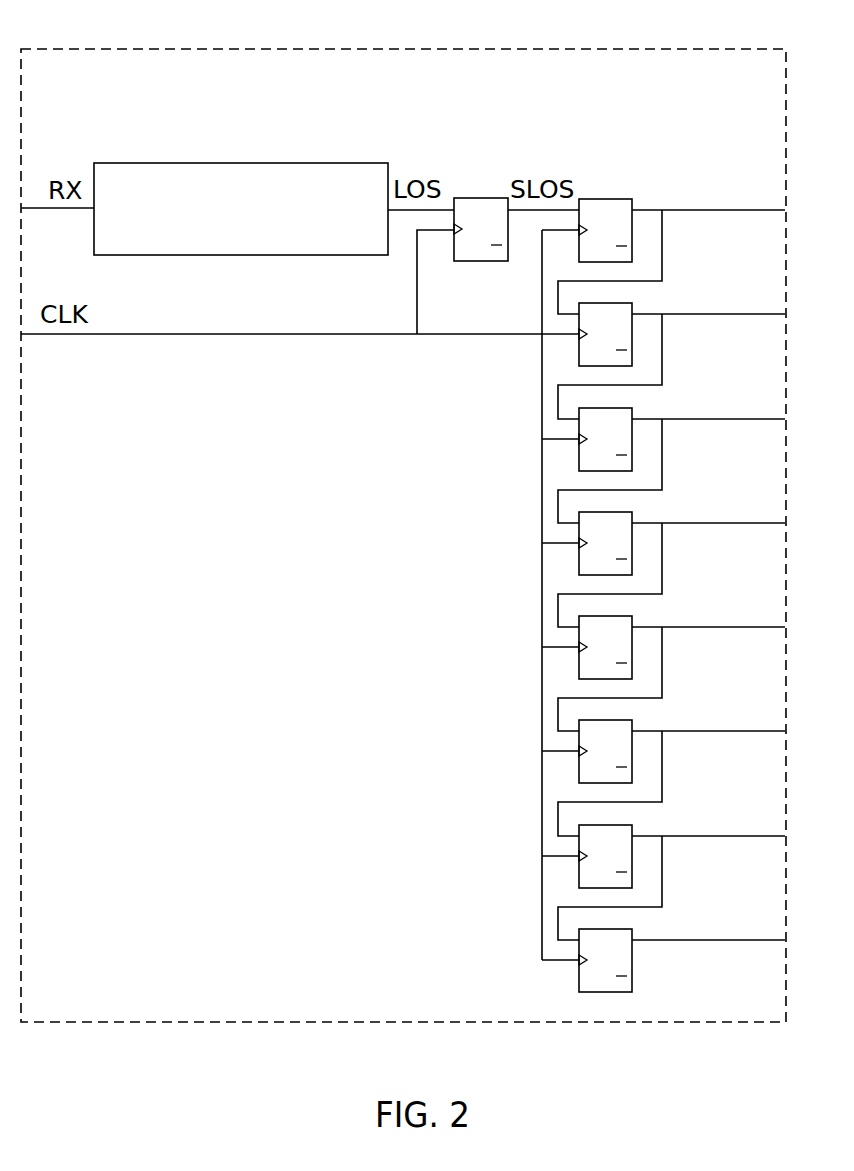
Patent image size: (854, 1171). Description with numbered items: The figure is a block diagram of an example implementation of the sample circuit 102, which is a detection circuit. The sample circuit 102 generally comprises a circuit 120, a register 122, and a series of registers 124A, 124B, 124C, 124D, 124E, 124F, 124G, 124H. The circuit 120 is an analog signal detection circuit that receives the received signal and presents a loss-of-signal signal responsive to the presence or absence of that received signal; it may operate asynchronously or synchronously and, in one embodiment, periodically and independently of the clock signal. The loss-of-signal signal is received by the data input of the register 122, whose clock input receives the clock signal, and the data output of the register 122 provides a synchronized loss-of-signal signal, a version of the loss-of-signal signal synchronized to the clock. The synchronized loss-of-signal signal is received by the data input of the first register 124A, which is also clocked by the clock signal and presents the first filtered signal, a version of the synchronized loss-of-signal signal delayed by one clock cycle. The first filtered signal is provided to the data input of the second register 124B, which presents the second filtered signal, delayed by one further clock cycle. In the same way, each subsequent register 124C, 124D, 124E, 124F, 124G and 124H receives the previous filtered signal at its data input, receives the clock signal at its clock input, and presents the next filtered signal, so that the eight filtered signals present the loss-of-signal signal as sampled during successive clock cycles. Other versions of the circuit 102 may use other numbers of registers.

The sample circuit 102 is at (68, 49).
The circuit 120 is at (368, 163).
The register 122 is at (491, 198).
The first register 124A is at (618, 199).
The second register 124B is at (577, 352).
The register 124C is at (577, 457).
The register 124D is at (577, 561).
The register 124E is at (577, 665).
The register 124F is at (577, 769).
The register 124G is at (577, 874).
The register 124H is at (577, 973).